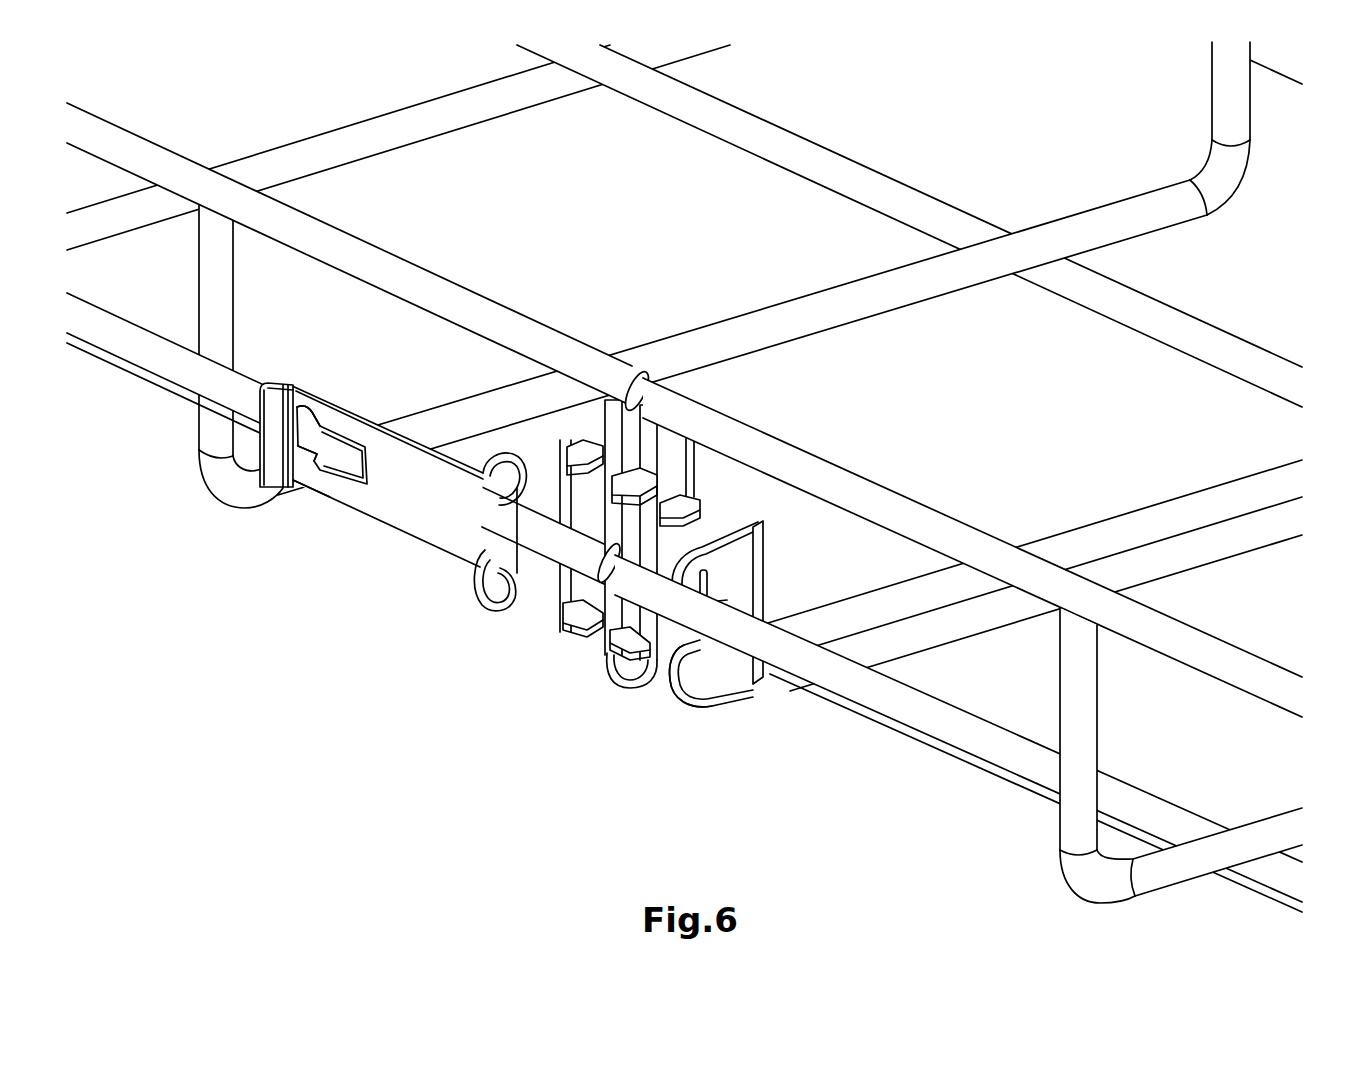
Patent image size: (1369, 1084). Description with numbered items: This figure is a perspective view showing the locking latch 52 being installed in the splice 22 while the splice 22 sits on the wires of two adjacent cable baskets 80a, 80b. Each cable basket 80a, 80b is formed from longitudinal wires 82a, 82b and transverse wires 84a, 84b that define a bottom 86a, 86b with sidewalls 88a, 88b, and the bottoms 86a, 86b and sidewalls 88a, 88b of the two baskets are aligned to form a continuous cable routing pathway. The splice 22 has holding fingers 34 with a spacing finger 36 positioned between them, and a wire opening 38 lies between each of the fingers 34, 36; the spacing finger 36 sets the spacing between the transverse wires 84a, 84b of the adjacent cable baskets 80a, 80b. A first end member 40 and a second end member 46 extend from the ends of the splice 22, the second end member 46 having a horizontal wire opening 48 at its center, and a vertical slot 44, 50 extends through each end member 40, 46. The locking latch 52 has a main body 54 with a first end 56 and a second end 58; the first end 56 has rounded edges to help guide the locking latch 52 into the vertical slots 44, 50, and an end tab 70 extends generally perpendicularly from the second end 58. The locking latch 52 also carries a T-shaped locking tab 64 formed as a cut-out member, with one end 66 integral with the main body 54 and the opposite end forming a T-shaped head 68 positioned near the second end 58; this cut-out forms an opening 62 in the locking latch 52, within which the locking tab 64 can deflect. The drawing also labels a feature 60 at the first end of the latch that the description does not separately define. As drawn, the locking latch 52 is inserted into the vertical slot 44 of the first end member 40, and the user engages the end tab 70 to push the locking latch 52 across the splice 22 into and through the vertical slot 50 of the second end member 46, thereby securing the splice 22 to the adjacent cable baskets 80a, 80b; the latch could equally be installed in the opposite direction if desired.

The splice 22 is at (760, 507).
The holding fingers 34 is at (590, 463).
The spacing finger 36 is at (660, 467).
The wire opening 38 is at (614, 400).
The first end member 40 is at (640, 535).
The vertical slot 44 is at (530, 593).
The second end member 46 is at (753, 612).
The horizontal wire opening 48 is at (667, 663).
The vertical slot 50 is at (740, 562).
The locking latch 52 is at (383, 472).
The main body 54 is at (413, 520).
The first end 56 is at (497, 533).
The second end 58 is at (320, 483).
The upper hook 60 is at (492, 468).
The opening 62 is at (300, 412).
The T-shaped locking tab 64 is at (325, 450).
The end 66 is at (358, 455).
The T-shaped head 68 is at (303, 460).
The end tab 70 is at (273, 403).
The cable basket 80a is at (227, 480).
The cable basket 80b is at (1100, 885).
The longitudinal wires 82a is at (112, 332).
The longitudinal wires 82b is at (962, 723).
The transverse wires 84a is at (632, 673).
The transverse wires 84b is at (708, 702).
The bottom 86a is at (330, 190).
The bottom 86b is at (1227, 602).
The sidewall 88a is at (217, 340).
The sidewall 88b is at (1027, 777).